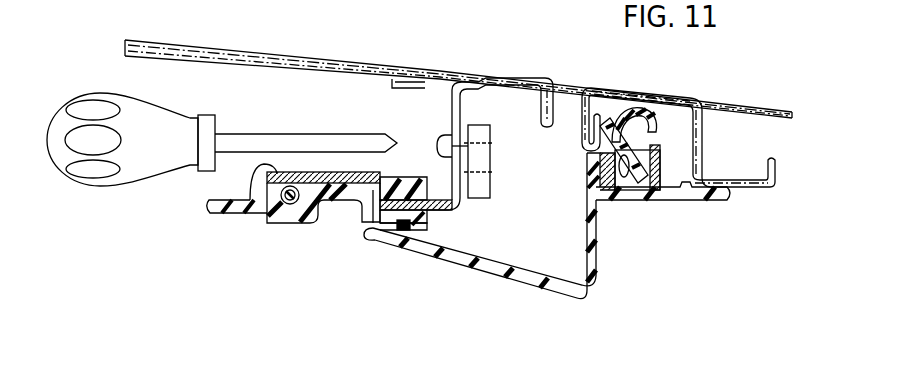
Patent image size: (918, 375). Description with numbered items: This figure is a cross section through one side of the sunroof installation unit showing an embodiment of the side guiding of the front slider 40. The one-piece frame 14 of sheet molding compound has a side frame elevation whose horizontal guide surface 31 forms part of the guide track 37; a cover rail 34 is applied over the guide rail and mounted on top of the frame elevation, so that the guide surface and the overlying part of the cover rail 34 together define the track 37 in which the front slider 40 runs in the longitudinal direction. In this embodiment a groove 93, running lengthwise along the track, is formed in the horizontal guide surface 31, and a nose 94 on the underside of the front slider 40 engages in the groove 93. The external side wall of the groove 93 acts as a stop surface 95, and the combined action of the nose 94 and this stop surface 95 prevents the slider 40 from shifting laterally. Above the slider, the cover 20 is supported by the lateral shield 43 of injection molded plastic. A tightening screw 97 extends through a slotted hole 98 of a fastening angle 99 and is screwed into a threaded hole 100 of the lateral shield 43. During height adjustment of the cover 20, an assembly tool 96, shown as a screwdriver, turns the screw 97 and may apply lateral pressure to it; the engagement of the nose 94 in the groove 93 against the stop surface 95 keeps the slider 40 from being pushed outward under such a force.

The frame 14 is at (524, 282).
The cover 20 is at (236, 51).
The horizontal guide surface 31 is at (369, 223).
The cover rail 34 is at (258, 170).
The guide track 37 is at (438, 212).
The front slider 40 is at (407, 180).
The lateral shield 43 is at (487, 172).
The groove 93 is at (383, 233).
The nose 94 is at (420, 227).
The stop surface 95 is at (413, 226).
The assembly tool 96 is at (130, 163).
The tightening screw 97 is at (440, 132).
The slotted hole 98 is at (459, 110).
The fastening angle 99 is at (415, 80).
The threaded hole 100 is at (486, 143).